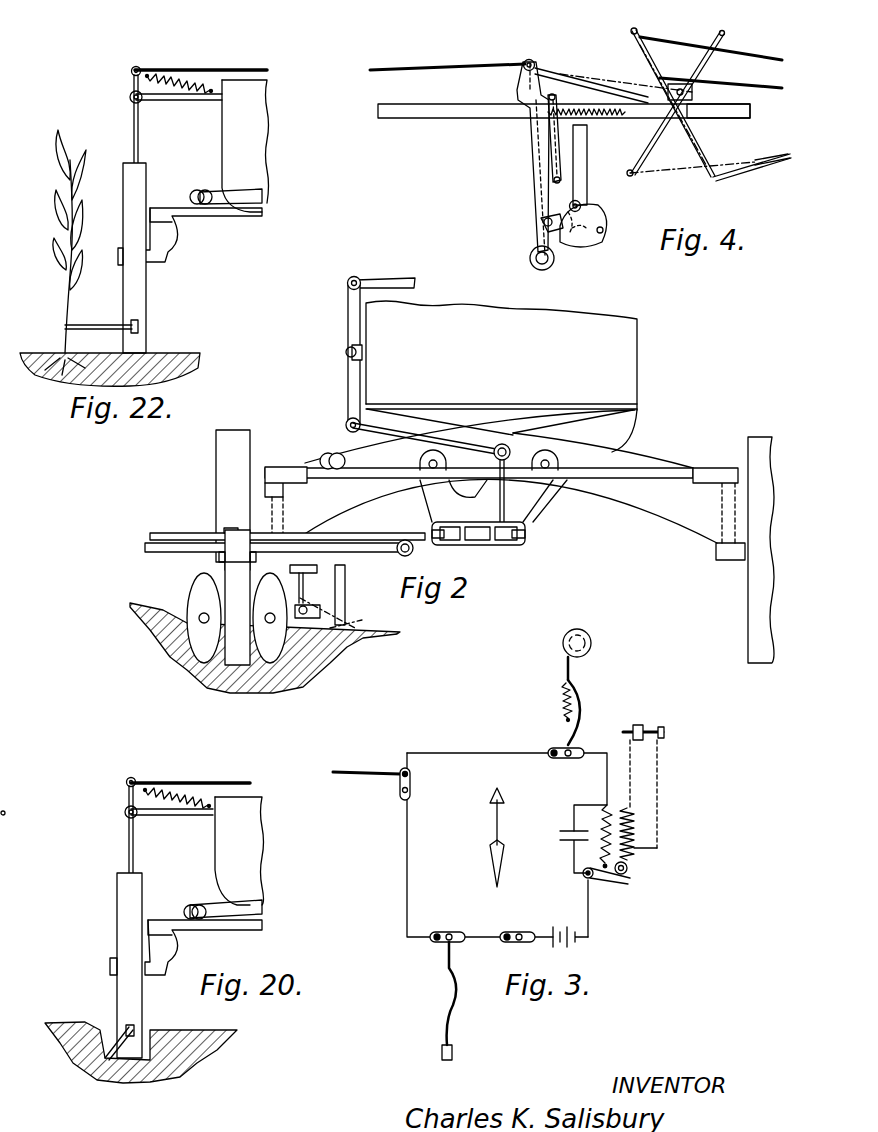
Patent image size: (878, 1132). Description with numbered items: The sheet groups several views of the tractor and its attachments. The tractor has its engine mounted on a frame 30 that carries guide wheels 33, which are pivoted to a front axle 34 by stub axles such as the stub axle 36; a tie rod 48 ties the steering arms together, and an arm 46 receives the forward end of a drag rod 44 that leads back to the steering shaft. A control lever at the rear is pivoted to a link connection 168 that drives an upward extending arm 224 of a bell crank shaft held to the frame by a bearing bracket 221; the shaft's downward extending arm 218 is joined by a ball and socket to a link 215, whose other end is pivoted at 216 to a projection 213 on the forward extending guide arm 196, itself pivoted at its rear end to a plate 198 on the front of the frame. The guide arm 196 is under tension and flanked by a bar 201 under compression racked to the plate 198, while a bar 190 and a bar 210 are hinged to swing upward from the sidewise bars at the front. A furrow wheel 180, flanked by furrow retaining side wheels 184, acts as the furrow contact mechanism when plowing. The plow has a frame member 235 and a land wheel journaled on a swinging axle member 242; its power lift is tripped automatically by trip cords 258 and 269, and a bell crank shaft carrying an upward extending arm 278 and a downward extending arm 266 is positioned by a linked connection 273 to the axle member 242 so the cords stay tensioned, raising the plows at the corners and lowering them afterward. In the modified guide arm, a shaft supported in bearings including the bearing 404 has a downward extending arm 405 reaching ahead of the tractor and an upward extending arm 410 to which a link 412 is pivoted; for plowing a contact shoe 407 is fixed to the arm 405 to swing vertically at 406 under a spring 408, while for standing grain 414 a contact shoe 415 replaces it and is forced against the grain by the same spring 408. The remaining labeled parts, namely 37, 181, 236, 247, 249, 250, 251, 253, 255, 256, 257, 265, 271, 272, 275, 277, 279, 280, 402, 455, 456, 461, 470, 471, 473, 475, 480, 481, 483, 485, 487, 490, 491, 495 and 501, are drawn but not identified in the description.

In FIG. 2, the frame 30 is at (640, 414).
In FIG. 22, the guide wheels 33 is at (147, 284).
In FIG. 2, the guide wheels 33 is at (233, 496).
In FIG. 20, the guide wheels 33 is at (117, 882).
In FIG. 2, the front axle 34 is at (668, 500).
In FIG. 2, the stub axle 36 is at (718, 557).
In FIG. 2, the pin 37 is at (502, 443).
In FIG. 2, the drag rod 44 is at (346, 453).
In FIG. 2, the arm 46 is at (313, 462).
In FIG. 2, the tie rod 48 is at (575, 480).
In FIG. 2, the link connection 168 is at (413, 279).
In FIG. 2, the furrow wheel 180 is at (237, 667).
In FIG. 2, the hub 181 is at (235, 576).
In FIG. 2, the furrow retaining side wheels 184 is at (200, 592).
In FIG. 2, the bar 190 is at (366, 543).
In FIG. 2, the guide arm 196 is at (517, 538).
In FIG. 2, the plate 198 is at (483, 512).
In FIG. 2, the bar 201 is at (432, 530).
In FIG. 2, the bar 210 is at (186, 533).
In FIG. 2, the projection 213 is at (506, 500).
In FIG. 2, the link 215 is at (418, 433).
In FIG. 2, the pivot 216 is at (573, 424).
In FIG. 2, the downward extending arm 218 is at (348, 396).
In FIG. 2, the bearing bracket 221 is at (348, 348).
In FIG. 2, the upward extending arm 224 is at (348, 305).
In FIG. 4, the frame member 235 is at (399, 118).
In FIG. 3, the end block 236 is at (453, 1052).
In FIG. 4, the swinging axle member 242 is at (531, 168).
In FIG. 4, the bar 247 is at (583, 175).
In FIG. 4, the pivot 249 is at (582, 206).
In FIG. 4, the cam 250 is at (592, 244).
In FIG. 4, the pin 251 is at (544, 222).
In FIG. 4, the link 253 is at (549, 130).
In FIG. 4, the spring 255 is at (599, 116).
In FIG. 4, the pin 256 is at (602, 232).
In FIG. 4, the roller 257 is at (531, 252).
In FIG. 4, the trip cord 258 is at (756, 165).
In FIG. 4, the link 265 is at (692, 170).
In FIG. 4, the downward extending arm 266 is at (738, 170).
In FIG. 4, the trip cord 269 is at (668, 42).
In FIG. 4, the hub 271 is at (692, 94).
In FIG. 4, the bar 272 is at (705, 118).
In FIG. 4, the linked connection 273 is at (548, 55).
In FIG. 4, the link 275 is at (530, 78).
In FIG. 4, the arm 277 is at (632, 33).
In FIG. 4, the upward extending arm 278 is at (645, 58).
In FIG. 4, the link 279 is at (660, 82).
In FIG. 4, the rod 280 is at (745, 84).
In FIG. 2, the ground 402 is at (283, 695).
In FIG. 20, the ground 402 is at (143, 1062).
In FIG. 22, the bearing 404 is at (178, 101).
In FIG. 20, the bearing 404 is at (170, 816).
In FIG. 22, the downward extending arm 405 is at (134, 151).
In FIG. 20, the downward extending arm 405 is at (129, 921).
In FIG. 20, the pivot 406 is at (134, 1030).
In FIG. 20, the contact shoe 407 is at (107, 1050).
In FIG. 22, the spring 408 is at (190, 75).
In FIG. 20, the spring 408 is at (186, 794).
In FIG. 22, the upward extending arm 410 is at (131, 75).
In FIG. 20, the upward extending arm 410 is at (126, 786).
In FIG. 22, the link 412 is at (247, 68).
In FIG. 20, the link 412 is at (198, 770).
In FIG. 22, the standing grain 414 is at (62, 312).
In FIG. 22, the contact shoe 415 is at (95, 312).
In FIG. 2, the switch contact 455 is at (306, 565).
In FIG. 3, the switch contact 455 is at (591, 643).
In FIG. 2, the bracket 456 is at (322, 606).
In FIG. 2, the bar 461 is at (347, 578).
In FIG. 2, the link 470 is at (360, 620).
In FIG. 3, the wire 471 is at (572, 670).
In FIG. 3, the switch 473 is at (560, 758).
In FIG. 3, the spring 475 is at (562, 700).
In FIG. 3, the battery 480 is at (578, 940).
In FIG. 3, the resistor 481 is at (598, 842).
In FIG. 3, the switch lever 483 is at (628, 868).
In FIG. 3, the coil 485 is at (638, 828).
In FIG. 3, the lever 487 is at (663, 715).
In FIG. 3, the switch 490 is at (434, 941).
In FIG. 3, the lever 491 is at (452, 990).
In FIG. 3, the lever 495 is at (355, 775).
In FIG. 4, the rod 501 is at (420, 68).